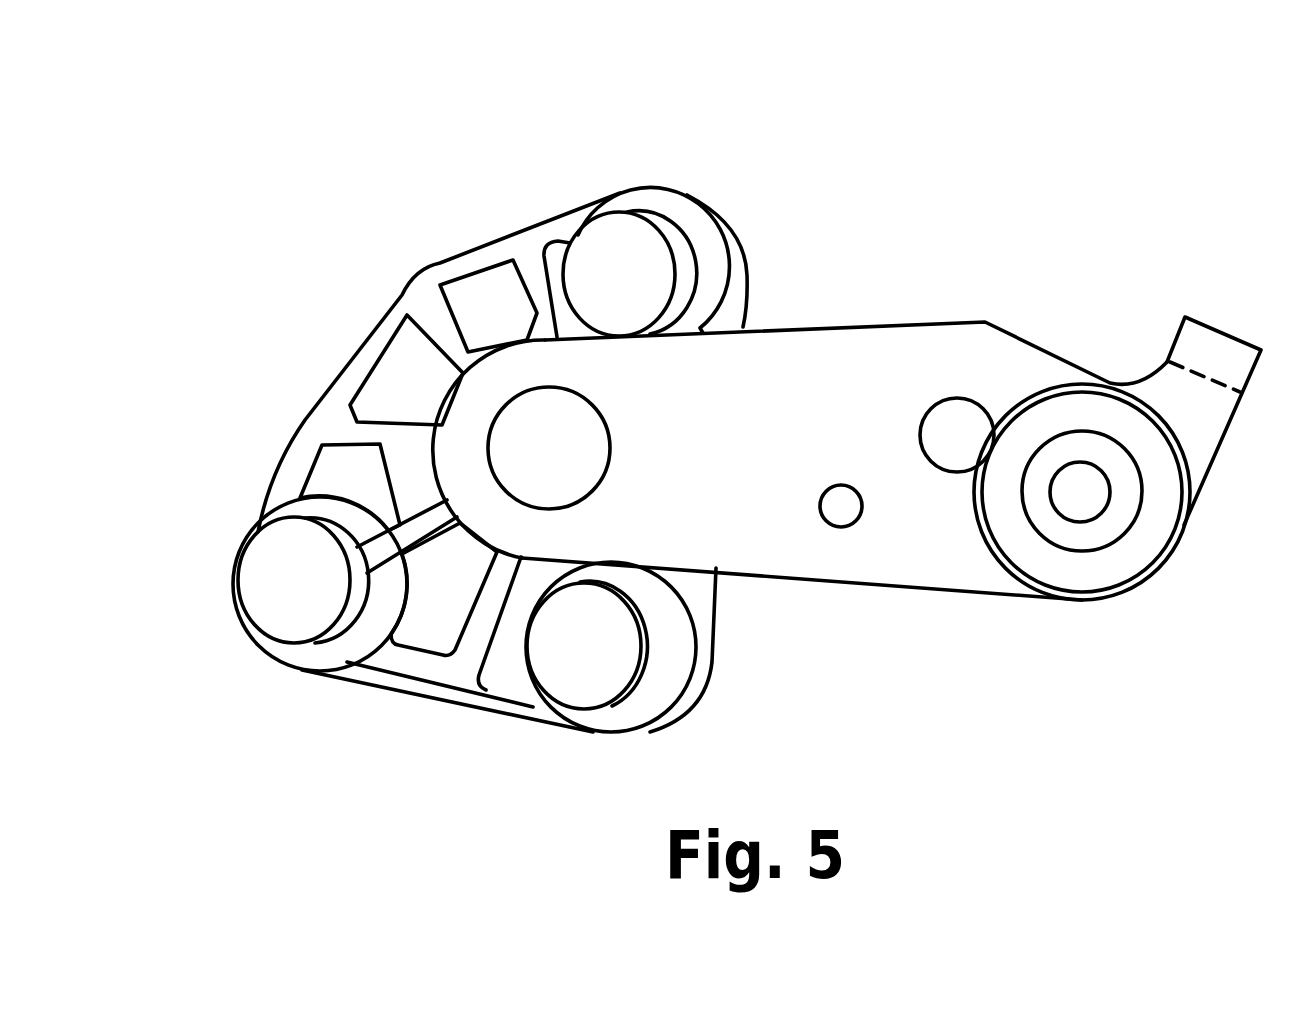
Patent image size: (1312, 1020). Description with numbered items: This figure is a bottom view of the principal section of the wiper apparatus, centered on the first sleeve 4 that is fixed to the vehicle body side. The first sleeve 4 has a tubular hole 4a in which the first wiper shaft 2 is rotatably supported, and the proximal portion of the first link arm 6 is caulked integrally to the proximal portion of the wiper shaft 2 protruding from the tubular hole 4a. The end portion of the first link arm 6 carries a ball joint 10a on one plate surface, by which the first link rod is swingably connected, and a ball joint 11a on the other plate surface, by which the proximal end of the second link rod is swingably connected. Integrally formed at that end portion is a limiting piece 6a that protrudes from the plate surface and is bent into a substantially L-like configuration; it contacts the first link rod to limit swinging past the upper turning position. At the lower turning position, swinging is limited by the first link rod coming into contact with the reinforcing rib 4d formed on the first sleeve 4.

The first wiper shaft 2 is at (573, 460).
The first sleeve 4 is at (595, 162).
The tubular hole 4a is at (497, 428).
The reinforcing rib 4d is at (410, 527).
The first link arm 6 is at (868, 347).
The limiting piece 6a is at (1220, 392).
The ball joint 10a is at (963, 417).
The ball joint 11a is at (1087, 495).